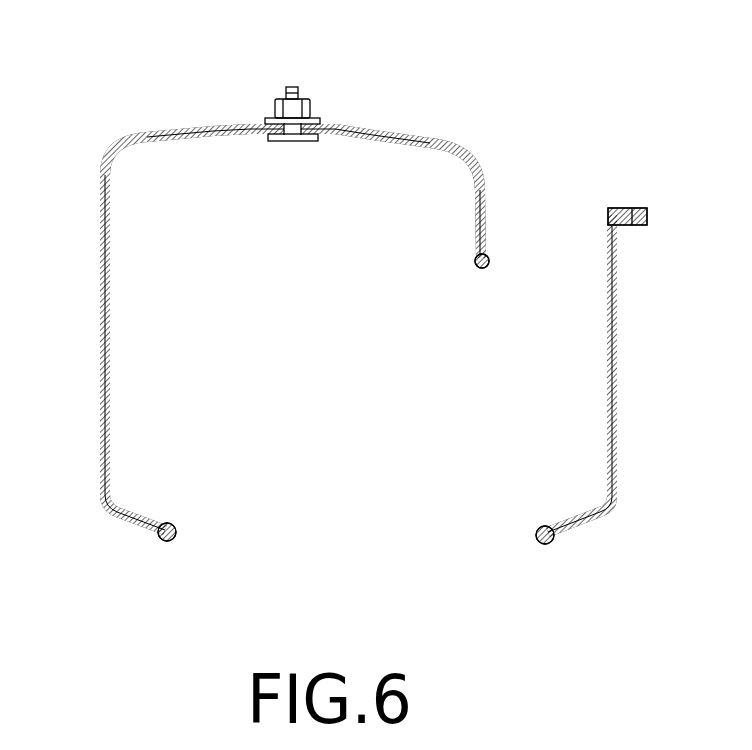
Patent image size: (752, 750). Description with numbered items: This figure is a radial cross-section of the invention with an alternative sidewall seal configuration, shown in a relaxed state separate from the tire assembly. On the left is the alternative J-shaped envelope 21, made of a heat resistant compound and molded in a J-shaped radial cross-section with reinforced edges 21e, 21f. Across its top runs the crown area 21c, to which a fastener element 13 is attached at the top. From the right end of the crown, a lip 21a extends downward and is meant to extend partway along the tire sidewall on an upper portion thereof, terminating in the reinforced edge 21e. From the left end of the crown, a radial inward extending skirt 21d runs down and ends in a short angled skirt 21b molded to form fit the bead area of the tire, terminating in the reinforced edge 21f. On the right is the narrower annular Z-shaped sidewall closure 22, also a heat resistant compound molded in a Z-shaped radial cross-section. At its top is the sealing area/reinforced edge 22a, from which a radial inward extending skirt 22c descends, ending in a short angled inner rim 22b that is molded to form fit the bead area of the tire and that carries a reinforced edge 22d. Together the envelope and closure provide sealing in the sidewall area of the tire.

The bolt 13 is at (293, 87).
The J-shaped envelope 21 is at (100, 203).
The lip 21a is at (483, 207).
The short angled skirt 21b is at (130, 521).
The crown area 21c is at (390, 131).
The radial inward extending skirt 21d is at (100, 307).
The reinforced edge 21e is at (480, 268).
The reinforced edge 21f is at (170, 523).
The Z-shaped sidewall closure 22 is at (618, 315).
The sealing area/reinforced edge 22a is at (632, 226).
The short angled inner rim 22b is at (587, 522).
The radial inward extending skirt 22c is at (618, 412).
The reinforced edge 22d is at (545, 526).